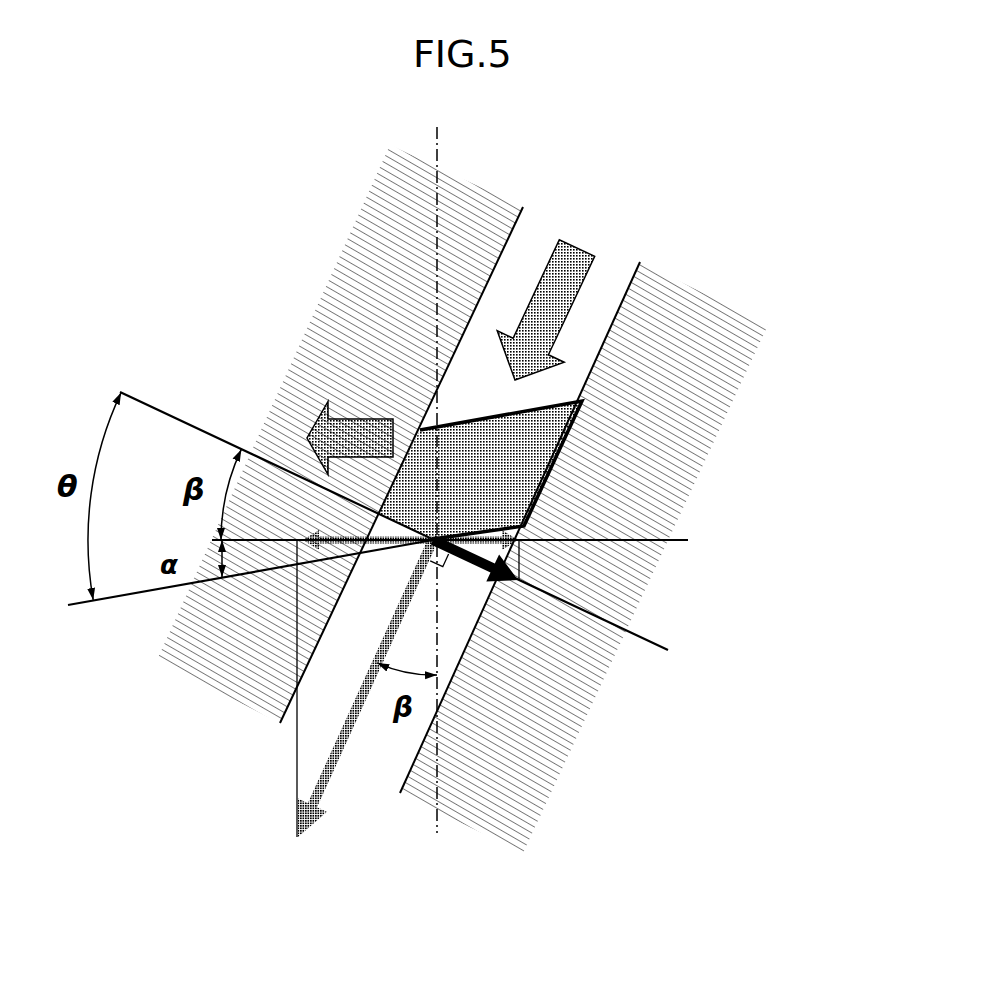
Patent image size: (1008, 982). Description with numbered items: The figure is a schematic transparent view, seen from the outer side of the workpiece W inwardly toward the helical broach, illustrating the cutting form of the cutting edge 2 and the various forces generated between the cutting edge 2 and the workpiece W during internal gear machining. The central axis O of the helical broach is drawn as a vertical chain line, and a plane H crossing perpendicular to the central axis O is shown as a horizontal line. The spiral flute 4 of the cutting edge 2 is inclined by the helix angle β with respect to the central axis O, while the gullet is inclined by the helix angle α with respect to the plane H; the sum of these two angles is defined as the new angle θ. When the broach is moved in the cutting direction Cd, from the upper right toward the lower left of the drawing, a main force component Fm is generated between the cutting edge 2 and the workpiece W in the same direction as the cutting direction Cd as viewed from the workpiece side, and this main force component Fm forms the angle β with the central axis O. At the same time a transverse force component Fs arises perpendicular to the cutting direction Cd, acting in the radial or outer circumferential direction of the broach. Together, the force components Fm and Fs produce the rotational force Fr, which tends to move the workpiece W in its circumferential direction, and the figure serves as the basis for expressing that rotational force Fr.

The cutting edge 2 is at (542, 475).
The spiral flute 4 is at (632, 263).
The workpiece W is at (755, 342).
The central axis O is at (437, 461).
The plane H is at (466, 542).
The cutting direction Cd is at (573, 240).
The rotational force Fr is at (325, 412).
The main force component Fm is at (333, 777).
The transverse force component Fs is at (502, 582).